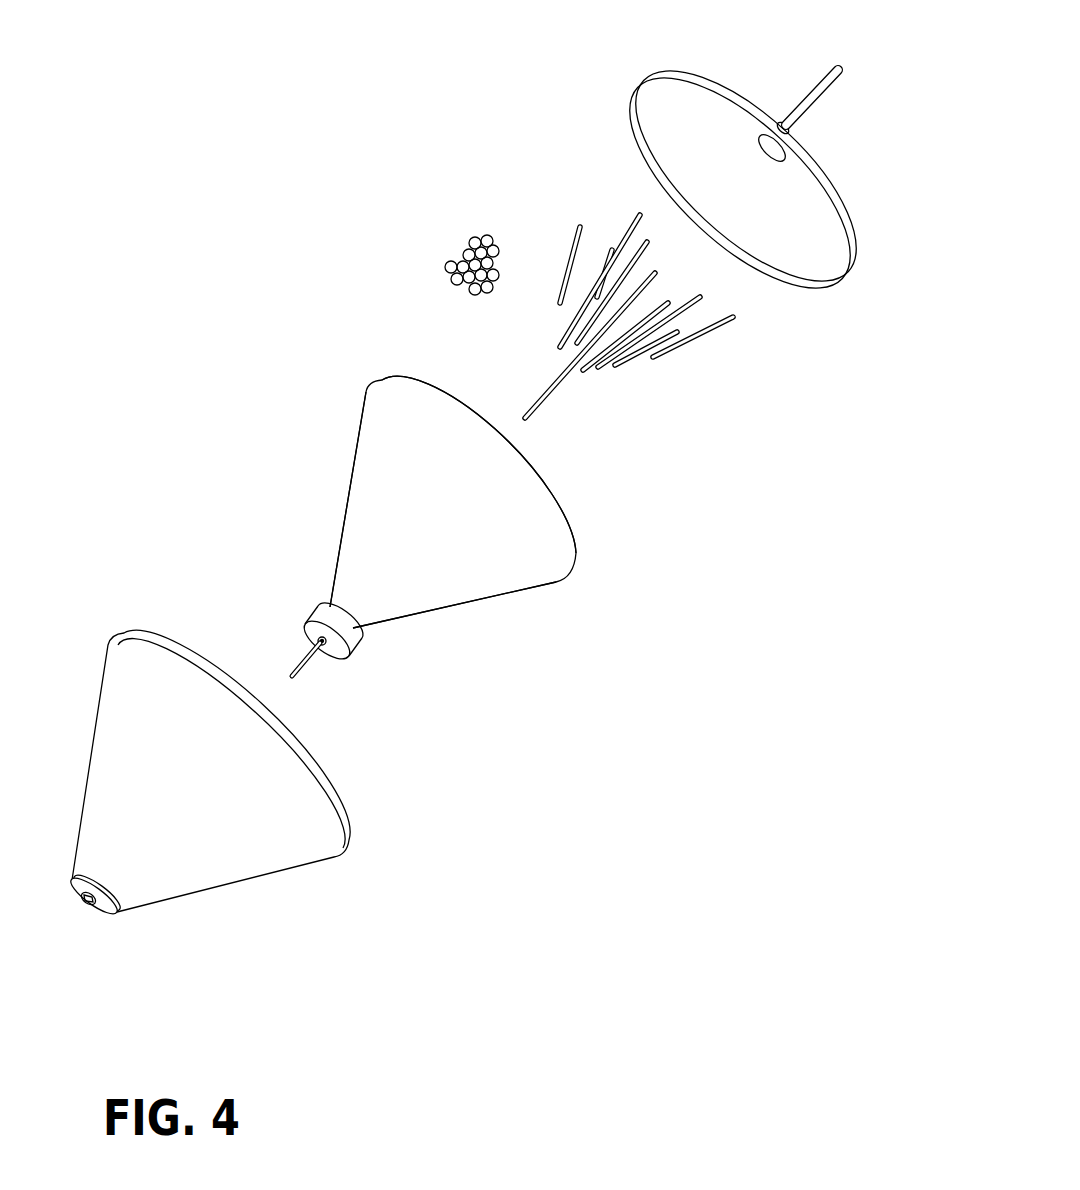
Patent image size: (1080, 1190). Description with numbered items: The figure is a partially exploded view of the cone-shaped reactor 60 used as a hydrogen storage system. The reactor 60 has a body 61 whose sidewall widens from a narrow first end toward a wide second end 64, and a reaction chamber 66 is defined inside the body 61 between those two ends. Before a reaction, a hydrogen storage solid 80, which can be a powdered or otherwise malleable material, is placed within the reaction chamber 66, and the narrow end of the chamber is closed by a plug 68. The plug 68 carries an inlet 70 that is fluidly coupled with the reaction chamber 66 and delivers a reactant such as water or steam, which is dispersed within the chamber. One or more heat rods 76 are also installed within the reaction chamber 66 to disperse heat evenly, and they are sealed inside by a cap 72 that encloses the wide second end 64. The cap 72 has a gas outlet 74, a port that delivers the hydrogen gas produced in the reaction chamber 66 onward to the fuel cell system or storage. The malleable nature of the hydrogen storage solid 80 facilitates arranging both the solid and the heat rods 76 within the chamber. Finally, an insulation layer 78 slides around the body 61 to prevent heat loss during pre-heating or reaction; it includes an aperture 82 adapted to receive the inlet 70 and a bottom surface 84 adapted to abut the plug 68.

The cone-shaped reactor 60 is at (228, 298).
The body 61 is at (483, 557).
The wide second end 64 is at (427, 387).
The reaction chamber 66 is at (580, 537).
The plug 68 is at (360, 655).
The inlet 70 is at (302, 670).
The cap 72 is at (705, 125).
The gas outlet 74 is at (830, 95).
The heat rods 76 is at (630, 223).
The insulation layer 78 is at (257, 845).
The hydrogen storage solid 80 is at (470, 392).
The aperture 82 is at (83, 905).
The bottom surface 84 is at (103, 913).